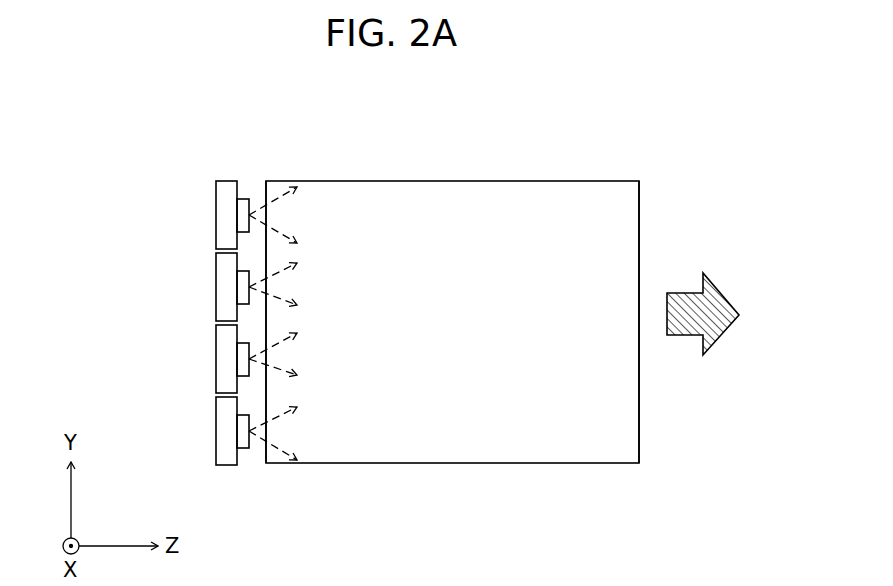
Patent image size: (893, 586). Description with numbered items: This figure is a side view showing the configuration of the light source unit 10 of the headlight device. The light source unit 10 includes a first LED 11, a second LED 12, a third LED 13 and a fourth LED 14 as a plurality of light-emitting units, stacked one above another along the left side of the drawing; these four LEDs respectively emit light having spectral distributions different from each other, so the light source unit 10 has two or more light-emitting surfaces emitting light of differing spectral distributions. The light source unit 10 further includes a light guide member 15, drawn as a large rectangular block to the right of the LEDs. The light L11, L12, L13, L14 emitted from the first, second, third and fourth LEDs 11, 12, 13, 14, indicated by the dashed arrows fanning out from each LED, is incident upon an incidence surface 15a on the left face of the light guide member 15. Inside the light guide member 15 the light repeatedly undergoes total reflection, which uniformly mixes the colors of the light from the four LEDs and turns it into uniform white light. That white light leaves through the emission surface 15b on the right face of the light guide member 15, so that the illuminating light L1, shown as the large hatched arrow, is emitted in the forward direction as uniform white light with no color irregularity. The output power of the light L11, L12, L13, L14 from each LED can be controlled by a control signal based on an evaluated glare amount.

The light source unit 10 is at (588, 118).
The first LED 11 is at (216, 223).
The second LED 12 is at (216, 298).
The third LED 13 is at (216, 360).
The fourth LED 14 is at (216, 433).
The light guide member 15 is at (472, 180).
The incidence surface 15a is at (264, 183).
The emission surface 15b is at (640, 205).
The illuminating light L1 is at (720, 290).
The light emitted from the first LED L11 is at (272, 200).
The light emitted from the second LED L12 is at (300, 262).
The light emitted from the third LED L13 is at (300, 380).
The light emitted from the fourth LED L14 is at (268, 441).